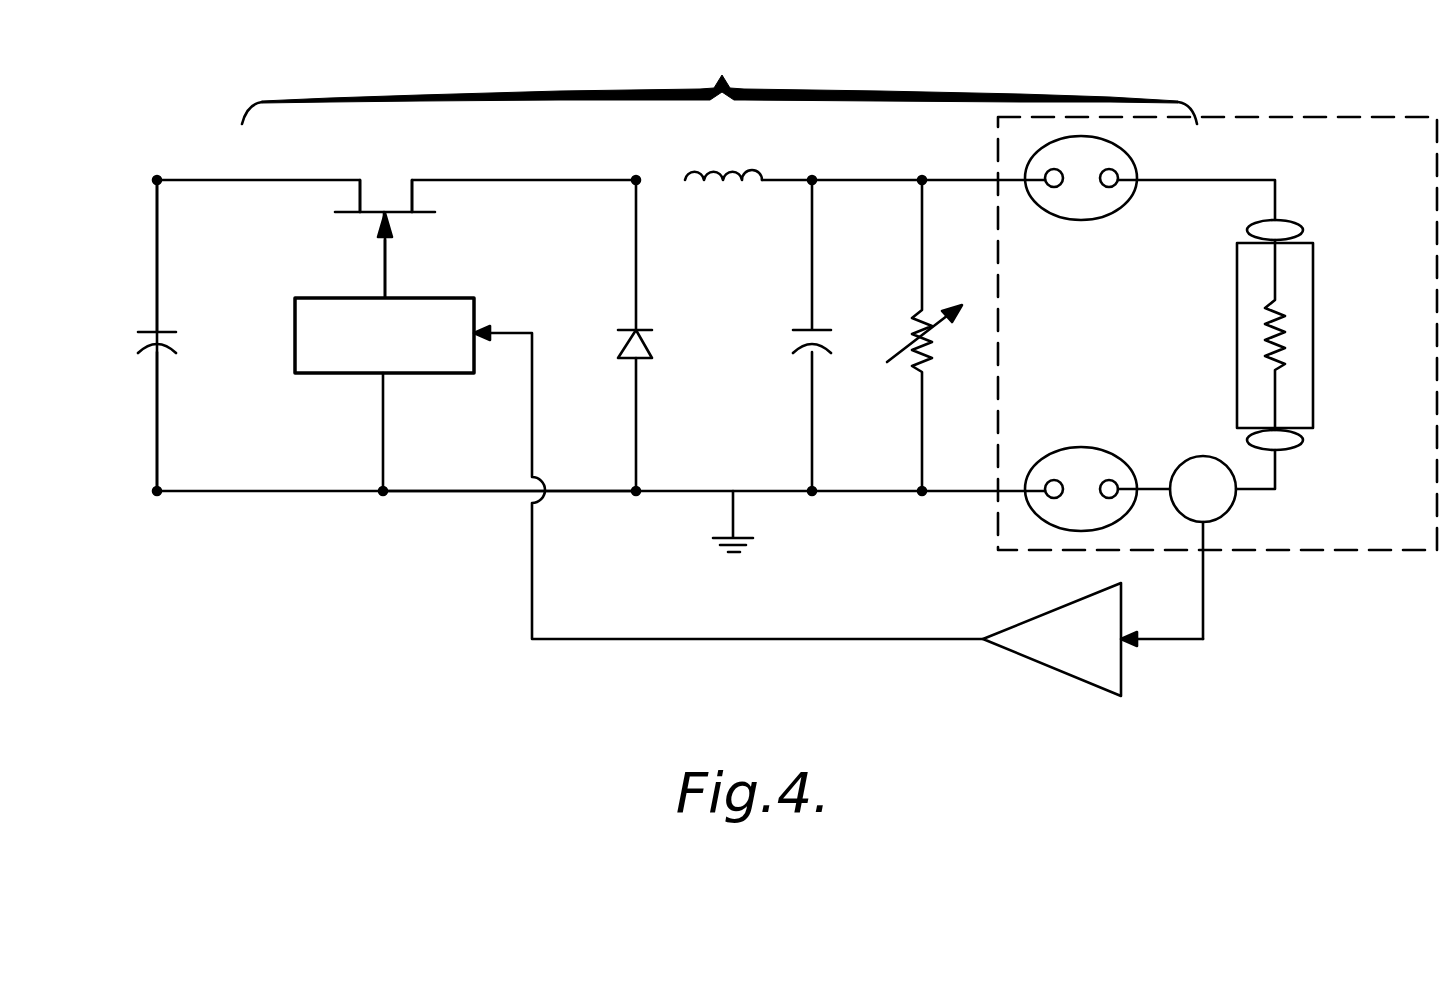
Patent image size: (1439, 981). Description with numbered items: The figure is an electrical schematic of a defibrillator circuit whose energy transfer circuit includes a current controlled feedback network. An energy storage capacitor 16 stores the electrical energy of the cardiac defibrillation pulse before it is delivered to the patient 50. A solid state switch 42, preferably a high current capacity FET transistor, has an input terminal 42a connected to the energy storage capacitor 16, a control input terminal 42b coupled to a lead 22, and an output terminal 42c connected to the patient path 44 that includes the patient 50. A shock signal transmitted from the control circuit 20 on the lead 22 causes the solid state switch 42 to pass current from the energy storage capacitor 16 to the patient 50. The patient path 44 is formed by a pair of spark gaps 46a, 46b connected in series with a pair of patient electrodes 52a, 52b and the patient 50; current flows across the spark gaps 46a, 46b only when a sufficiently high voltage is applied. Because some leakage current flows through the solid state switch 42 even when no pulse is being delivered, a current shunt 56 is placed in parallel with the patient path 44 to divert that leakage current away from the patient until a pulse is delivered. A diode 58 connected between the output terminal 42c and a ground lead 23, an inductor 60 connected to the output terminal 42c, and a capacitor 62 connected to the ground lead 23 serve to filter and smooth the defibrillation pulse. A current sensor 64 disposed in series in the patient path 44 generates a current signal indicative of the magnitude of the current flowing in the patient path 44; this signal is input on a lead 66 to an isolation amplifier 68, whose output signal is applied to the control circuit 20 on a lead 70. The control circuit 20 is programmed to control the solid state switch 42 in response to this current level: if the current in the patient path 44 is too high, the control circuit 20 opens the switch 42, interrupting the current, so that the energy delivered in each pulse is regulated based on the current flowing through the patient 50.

The energy storage capacitor 16 is at (150, 330).
The control circuit 20 is at (312, 374).
The lead 22 is at (383, 250).
The ground lead 23 is at (475, 489).
The solid state switch 42 is at (367, 208).
The input terminal 42a is at (298, 178).
The control input terminal 42b is at (390, 205).
The output terminal 42c is at (476, 178).
The patient path 44 is at (1372, 117).
The spark gap 46a is at (1077, 221).
The spark gap 46b is at (1075, 447).
The patient 50 is at (1237, 326).
The patient electrode 52a is at (1303, 233).
The patient electrode 52b is at (1303, 440).
The current shunt 56 is at (927, 313).
The diode 58 is at (630, 328).
The inductor 60 is at (732, 168).
The capacitor 62 is at (805, 328).
The current sensor 64 is at (1200, 456).
The lead 66 is at (1205, 535).
The isolation amplifier 68 is at (1040, 662).
The lead 70 is at (823, 638).